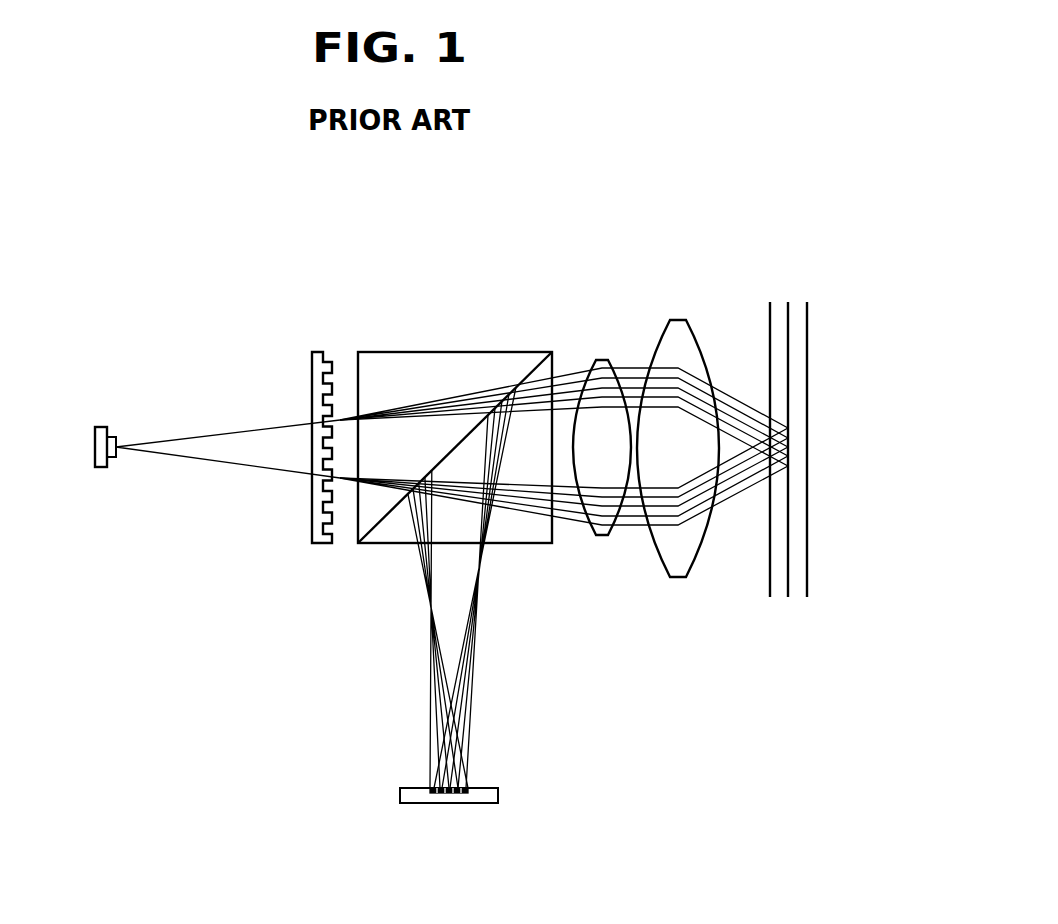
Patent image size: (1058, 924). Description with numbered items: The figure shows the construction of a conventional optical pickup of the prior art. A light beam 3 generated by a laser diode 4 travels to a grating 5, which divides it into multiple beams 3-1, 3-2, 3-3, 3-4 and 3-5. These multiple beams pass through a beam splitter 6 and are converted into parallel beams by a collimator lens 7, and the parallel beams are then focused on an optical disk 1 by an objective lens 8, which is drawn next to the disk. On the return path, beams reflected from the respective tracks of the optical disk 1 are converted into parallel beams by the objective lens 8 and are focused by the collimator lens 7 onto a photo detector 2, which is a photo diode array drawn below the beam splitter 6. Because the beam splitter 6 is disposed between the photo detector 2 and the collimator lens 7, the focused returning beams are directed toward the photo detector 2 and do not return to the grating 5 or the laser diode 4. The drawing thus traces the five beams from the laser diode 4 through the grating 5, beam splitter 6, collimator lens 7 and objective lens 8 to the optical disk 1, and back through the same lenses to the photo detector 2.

The optical disk 1 is at (782, 313).
The photo detector 2 is at (500, 796).
The light beam 3 is at (250, 428).
The beam 3-1 is at (730, 394).
The beam 3-2 is at (745, 414).
The beam 3-3 is at (760, 427).
The beam 3-4 is at (755, 478).
The beam 3-5 is at (733, 500).
The laser diode 4 is at (102, 427).
The grating 5 is at (316, 350).
The beam splitter 6 is at (468, 352).
The collimator lens 7 is at (601, 357).
The objective lens 8 is at (677, 313).